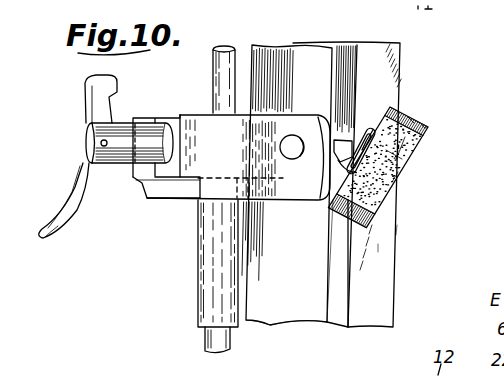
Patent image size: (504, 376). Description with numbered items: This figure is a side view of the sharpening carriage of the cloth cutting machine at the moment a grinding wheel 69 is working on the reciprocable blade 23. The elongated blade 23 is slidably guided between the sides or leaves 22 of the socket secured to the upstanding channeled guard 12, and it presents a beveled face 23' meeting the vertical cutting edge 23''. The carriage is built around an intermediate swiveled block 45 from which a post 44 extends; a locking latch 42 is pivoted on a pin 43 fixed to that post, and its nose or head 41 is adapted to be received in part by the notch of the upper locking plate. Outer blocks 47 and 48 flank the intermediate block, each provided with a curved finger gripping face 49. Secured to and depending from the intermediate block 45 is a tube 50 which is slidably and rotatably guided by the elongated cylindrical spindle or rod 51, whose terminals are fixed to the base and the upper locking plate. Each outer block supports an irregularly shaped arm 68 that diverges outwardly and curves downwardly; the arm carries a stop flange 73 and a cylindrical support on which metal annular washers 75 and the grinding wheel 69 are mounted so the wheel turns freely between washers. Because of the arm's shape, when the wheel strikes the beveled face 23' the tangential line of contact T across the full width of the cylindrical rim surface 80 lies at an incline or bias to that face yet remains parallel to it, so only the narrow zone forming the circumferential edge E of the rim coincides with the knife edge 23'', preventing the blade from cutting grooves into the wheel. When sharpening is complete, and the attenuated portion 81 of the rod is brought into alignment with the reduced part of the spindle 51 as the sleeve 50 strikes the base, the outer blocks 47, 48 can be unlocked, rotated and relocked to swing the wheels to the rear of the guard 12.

The nose or head 41 is at (92, 79).
The locking latch 42 is at (82, 145).
The pin 43 is at (100, 147).
The post 44 is at (118, 158).
The intermediate swiveled block 45 is at (168, 168).
The outer block 47 is at (138, 187).
The outer block 48 is at (187, 170).
The curved finger gripping face 49 is at (264, 205).
The tube 50 is at (200, 257).
The cylindrical spindle or rod 51 is at (213, 93).
The elongated blade 23 is at (321, 173).
The beveled face 23' is at (409, 247).
The vertical cutting edge 23'' is at (419, 223).
The sides or leaves 22 is at (337, 265).
The upstanding channeled guard 12 is at (275, 307).
The irregularly shaped arm 68 is at (340, 157).
The grinding wheel 69 is at (426, 147).
The stop flange 73 is at (355, 143).
The metal annular washers 75 is at (373, 130).
The cylindrical rim surface 80 is at (414, 122).
The attenuated portion 81 is at (385, 119).
The tangential line of contact T is at (432, 127).
The circumferential edge E is at (418, 174).